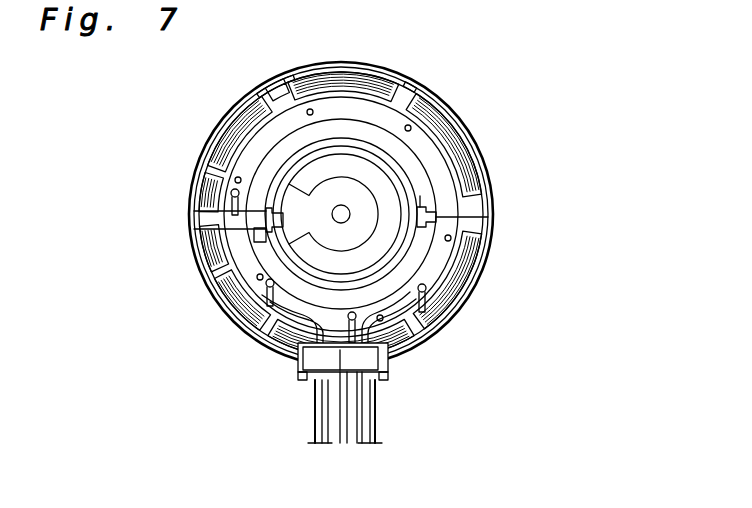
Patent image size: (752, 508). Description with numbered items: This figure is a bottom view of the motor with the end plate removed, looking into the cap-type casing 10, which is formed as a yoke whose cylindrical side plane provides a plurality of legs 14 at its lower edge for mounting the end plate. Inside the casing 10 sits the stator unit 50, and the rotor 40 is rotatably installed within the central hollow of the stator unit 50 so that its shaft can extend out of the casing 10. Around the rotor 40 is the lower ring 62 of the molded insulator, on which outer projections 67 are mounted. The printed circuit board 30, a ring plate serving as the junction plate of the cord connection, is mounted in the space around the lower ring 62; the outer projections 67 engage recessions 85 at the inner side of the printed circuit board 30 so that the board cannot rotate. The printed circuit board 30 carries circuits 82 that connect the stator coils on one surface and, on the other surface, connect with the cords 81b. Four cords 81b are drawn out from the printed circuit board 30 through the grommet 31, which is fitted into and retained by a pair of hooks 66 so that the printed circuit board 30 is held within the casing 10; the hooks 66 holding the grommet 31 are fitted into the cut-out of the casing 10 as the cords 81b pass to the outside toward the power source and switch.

The casing 10 is at (490, 183).
The legs 14 is at (250, 108).
The printed circuit board 30 is at (428, 156).
The grommet 31 is at (348, 358).
The rotor 40 is at (365, 219).
The stator unit 50 is at (372, 145).
The lower ring 62 is at (305, 268).
The hooks 66 is at (297, 372).
The outer projections 67 is at (266, 220).
The cords 81b is at (320, 408).
The circuits 82 is at (428, 284).
The recessions 85 is at (280, 232).